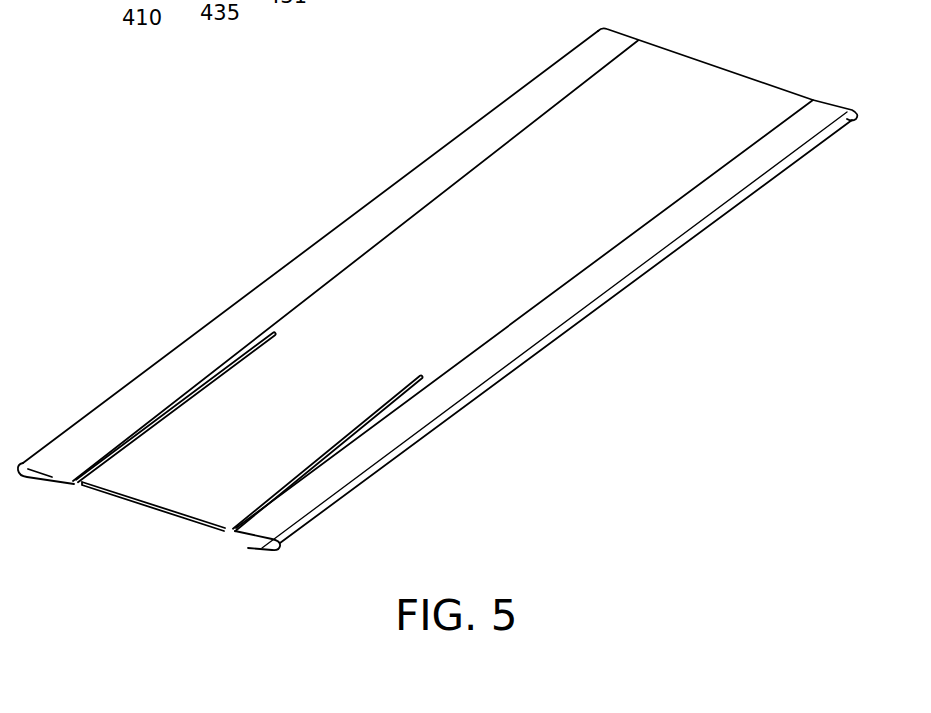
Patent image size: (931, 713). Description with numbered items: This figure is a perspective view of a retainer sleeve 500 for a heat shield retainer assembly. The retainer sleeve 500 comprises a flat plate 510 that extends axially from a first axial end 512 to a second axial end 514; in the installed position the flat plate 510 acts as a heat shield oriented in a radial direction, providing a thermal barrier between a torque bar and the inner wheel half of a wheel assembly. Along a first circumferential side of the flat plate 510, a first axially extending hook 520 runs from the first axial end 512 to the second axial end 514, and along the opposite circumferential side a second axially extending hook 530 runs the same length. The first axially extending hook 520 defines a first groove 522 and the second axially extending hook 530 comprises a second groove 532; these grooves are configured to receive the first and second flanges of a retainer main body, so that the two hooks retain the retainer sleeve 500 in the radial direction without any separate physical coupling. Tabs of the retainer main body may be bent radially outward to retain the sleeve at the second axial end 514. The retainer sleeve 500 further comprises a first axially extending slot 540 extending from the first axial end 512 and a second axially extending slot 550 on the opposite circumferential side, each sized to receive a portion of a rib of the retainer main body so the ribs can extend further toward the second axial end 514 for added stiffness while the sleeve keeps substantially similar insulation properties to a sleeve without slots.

The retainer sleeve 500 is at (150, 185).
The flat plate 510 is at (488, 267).
The first axial end 512 is at (140, 500).
The second axial end 514 is at (675, 56).
The first axially extending hook 520 is at (390, 207).
The first groove 522 is at (46, 473).
The second axially extending hook 530 is at (670, 230).
The second groove 532 is at (258, 546).
The first axially extending slot 540 is at (160, 421).
The second axially extending slot 550 is at (390, 401).